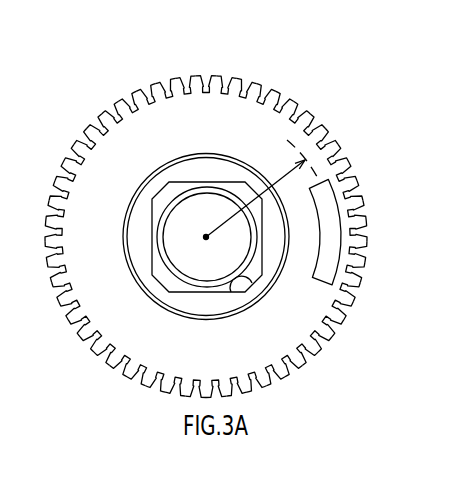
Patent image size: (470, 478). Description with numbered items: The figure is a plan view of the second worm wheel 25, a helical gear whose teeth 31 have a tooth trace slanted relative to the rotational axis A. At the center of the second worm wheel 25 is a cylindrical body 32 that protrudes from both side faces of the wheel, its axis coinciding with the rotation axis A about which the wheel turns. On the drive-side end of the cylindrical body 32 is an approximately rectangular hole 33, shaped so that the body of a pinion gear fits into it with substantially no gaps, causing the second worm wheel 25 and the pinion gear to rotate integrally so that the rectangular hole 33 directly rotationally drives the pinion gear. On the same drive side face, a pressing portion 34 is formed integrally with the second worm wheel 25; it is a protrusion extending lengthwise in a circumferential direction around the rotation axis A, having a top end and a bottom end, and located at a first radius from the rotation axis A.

The second worm wheel 25 is at (375, 98).
The teeth 31 is at (266, 91).
The cylindrical body 32 is at (185, 170).
The rectangular hole 33 is at (252, 283).
The pressing portion 34 is at (330, 244).